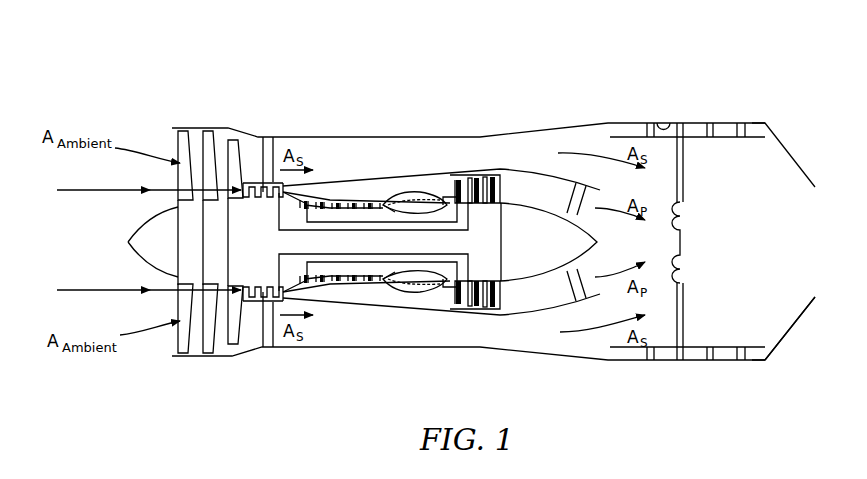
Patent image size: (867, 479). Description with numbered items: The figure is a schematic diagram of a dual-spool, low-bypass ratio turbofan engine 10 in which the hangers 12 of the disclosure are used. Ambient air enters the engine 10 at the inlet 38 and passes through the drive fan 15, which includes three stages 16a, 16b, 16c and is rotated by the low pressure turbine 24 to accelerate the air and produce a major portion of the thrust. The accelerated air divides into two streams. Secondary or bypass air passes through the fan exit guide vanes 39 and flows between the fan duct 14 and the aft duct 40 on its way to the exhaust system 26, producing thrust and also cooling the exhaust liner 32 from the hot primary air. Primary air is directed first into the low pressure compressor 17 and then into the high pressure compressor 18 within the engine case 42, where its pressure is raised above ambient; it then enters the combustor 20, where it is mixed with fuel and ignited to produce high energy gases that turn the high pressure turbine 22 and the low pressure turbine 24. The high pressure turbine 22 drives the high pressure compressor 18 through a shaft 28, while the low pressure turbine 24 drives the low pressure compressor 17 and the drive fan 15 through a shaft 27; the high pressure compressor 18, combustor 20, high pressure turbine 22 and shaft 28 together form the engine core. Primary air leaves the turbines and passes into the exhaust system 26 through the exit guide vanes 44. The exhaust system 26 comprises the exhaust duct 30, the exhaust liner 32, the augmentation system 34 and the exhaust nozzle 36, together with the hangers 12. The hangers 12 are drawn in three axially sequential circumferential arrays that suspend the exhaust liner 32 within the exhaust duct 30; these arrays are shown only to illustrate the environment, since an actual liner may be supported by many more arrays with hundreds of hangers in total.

The turbofan engine 10 is at (236, 90).
The hangers 12 is at (668, 245).
The fan duct 14 is at (355, 137).
The drive fan 15 is at (225, 247).
The first fan stage 16a is at (178, 345).
The second fan stage 16b is at (203, 353).
The third fan stage 16c is at (233, 345).
The low pressure compressor 17 is at (255, 297).
The high pressure compressor 18 is at (328, 265).
The combustor 20 is at (422, 284).
The high pressure turbine 22 is at (453, 295).
The low pressure turbine 24 is at (488, 311).
The exhaust system 26 is at (682, 110).
The shaft 27 is at (372, 247).
The shaft 28 is at (437, 262).
The exhaust duct 30 is at (658, 122).
The exhaust liner 32 is at (769, 246).
The augmentation system 34 is at (697, 207).
The exhaust nozzle 36 is at (793, 328).
The inlet 38 is at (132, 242).
The fan exit guide vanes 39 is at (266, 139).
The aft duct 40 is at (372, 185).
The engine case 42 is at (392, 205).
The exit guide vanes 44 is at (566, 200).